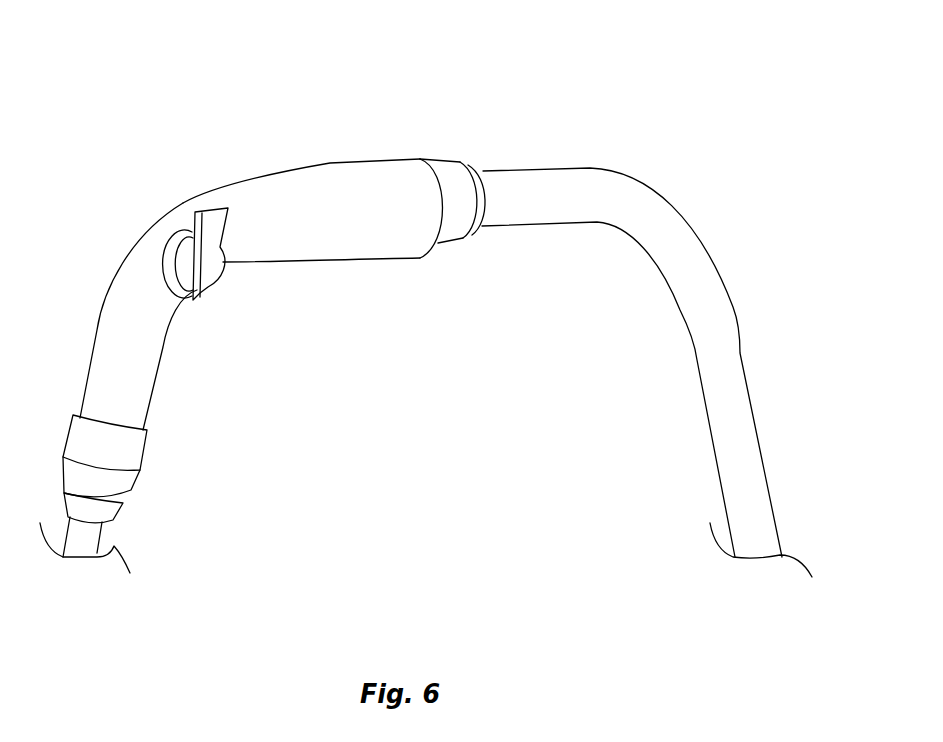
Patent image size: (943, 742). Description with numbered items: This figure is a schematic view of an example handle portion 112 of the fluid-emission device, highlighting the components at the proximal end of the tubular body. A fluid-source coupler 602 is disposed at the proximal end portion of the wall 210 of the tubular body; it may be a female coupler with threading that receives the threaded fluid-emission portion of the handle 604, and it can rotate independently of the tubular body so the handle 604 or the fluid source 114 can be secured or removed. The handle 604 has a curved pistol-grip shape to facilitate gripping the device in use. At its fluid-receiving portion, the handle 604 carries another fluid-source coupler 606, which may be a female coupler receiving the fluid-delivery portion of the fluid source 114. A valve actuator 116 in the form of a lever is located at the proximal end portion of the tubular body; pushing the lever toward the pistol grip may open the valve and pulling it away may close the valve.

The handle portion 112 is at (453, 77).
The valve actuator 116 is at (210, 216).
The handle 604 is at (137, 363).
The fluid-source coupler 602 is at (133, 457).
The wall 210 is at (90, 548).
The fluid-source coupler 606 is at (445, 230).
The fluid source 114 is at (713, 383).